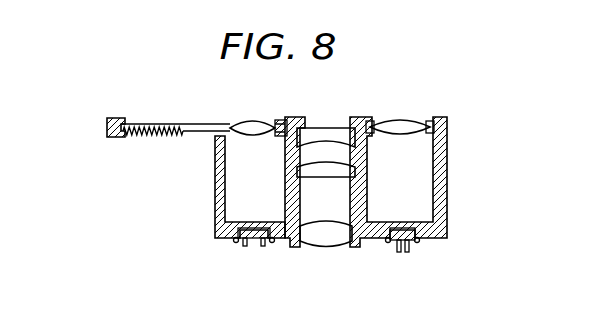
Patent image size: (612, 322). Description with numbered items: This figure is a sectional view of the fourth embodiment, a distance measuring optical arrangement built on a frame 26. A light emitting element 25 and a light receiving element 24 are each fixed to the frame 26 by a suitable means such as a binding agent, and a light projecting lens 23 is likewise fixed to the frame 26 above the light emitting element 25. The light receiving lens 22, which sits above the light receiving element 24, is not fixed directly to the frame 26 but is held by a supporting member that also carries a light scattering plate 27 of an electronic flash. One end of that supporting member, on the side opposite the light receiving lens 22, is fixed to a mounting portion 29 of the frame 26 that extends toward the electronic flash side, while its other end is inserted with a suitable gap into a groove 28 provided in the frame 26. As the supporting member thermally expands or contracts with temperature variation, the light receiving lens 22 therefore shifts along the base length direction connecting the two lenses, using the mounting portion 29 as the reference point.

The light receiving lens 22 is at (250, 125).
The light projecting lens 23 is at (400, 125).
The light receiving element 24 is at (252, 245).
The light emitting element 25 is at (385, 238).
The frame 26 is at (443, 160).
The light scattering plate 27 is at (150, 130).
The groove 28 is at (281, 122).
The mounting portion 29 is at (113, 140).